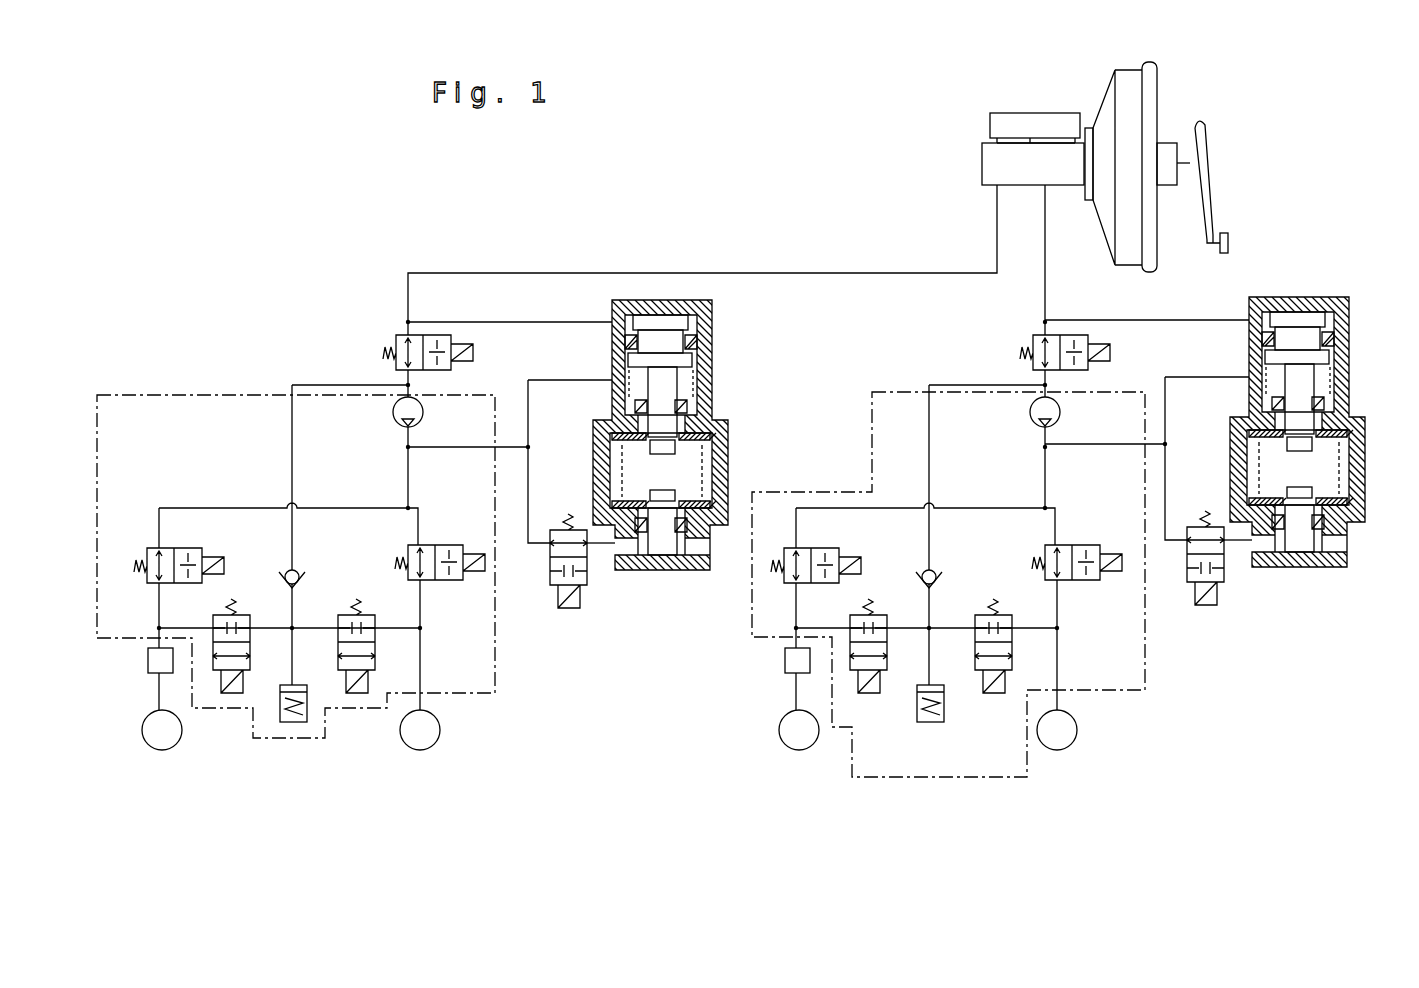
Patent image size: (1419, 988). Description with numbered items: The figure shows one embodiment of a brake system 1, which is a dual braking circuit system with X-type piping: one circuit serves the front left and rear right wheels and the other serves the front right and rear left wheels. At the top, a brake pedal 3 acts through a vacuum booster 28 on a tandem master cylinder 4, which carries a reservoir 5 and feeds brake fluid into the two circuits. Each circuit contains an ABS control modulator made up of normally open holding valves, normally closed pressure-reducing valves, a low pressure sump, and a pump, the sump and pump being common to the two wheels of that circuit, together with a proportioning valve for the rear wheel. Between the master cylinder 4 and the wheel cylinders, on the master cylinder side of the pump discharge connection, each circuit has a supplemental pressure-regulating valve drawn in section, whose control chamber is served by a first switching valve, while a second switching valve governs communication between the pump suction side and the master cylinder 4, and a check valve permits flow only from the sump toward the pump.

The brake system 1 is at (736, 244).
The brake pedal 3 is at (1228, 243).
The tandem master cylinder 4 is at (982, 156).
The reservoir 5 is at (1052, 118).
The vacuum booster 28 is at (1128, 85).